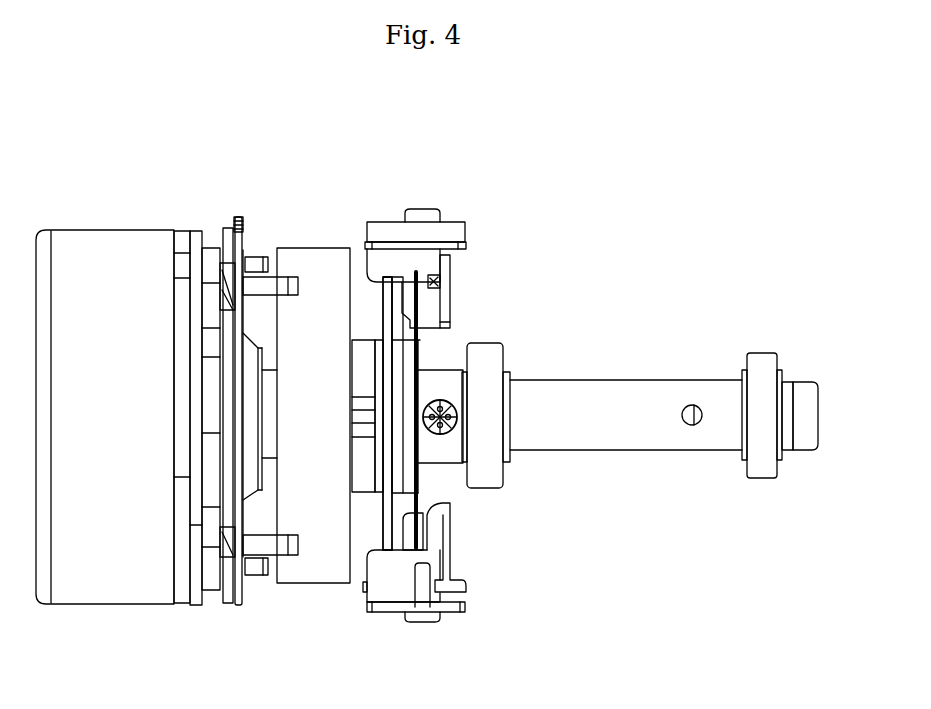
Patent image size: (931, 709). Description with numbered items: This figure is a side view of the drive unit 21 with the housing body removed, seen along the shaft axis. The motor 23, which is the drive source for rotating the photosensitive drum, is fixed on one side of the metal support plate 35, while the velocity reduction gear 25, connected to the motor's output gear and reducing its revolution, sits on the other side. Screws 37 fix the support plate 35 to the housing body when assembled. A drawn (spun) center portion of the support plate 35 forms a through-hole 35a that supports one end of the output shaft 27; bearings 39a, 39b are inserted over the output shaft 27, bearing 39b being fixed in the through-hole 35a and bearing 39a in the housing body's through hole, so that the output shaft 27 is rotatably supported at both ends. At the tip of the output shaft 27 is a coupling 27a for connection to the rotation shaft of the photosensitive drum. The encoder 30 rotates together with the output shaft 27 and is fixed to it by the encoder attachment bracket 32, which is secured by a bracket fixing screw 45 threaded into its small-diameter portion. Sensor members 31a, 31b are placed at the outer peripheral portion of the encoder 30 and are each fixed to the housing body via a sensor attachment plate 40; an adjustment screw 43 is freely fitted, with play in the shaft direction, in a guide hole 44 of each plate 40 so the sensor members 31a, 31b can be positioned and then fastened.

The drive unit 21 is at (604, 237).
The motor 23 is at (113, 597).
The velocity reduction gear 25 is at (297, 247).
The output shaft 27 is at (630, 391).
The coupling 27a is at (822, 418).
The encoder 30 is at (430, 335).
The sensor member 31a is at (433, 297).
The sensor member 31b is at (437, 520).
The encoder attachment bracket 32 is at (378, 276).
The support plate 35 is at (238, 217).
The through-hole 35a is at (247, 401).
The screw 37 is at (292, 582).
The bearing 39a is at (507, 477).
The bearing 39b is at (267, 440).
The sensor attachment plate 40 is at (451, 222).
The adjustment screw 43 is at (421, 209).
The guide hole 44 is at (403, 613).
The bracket fixing screw 45 is at (445, 400).